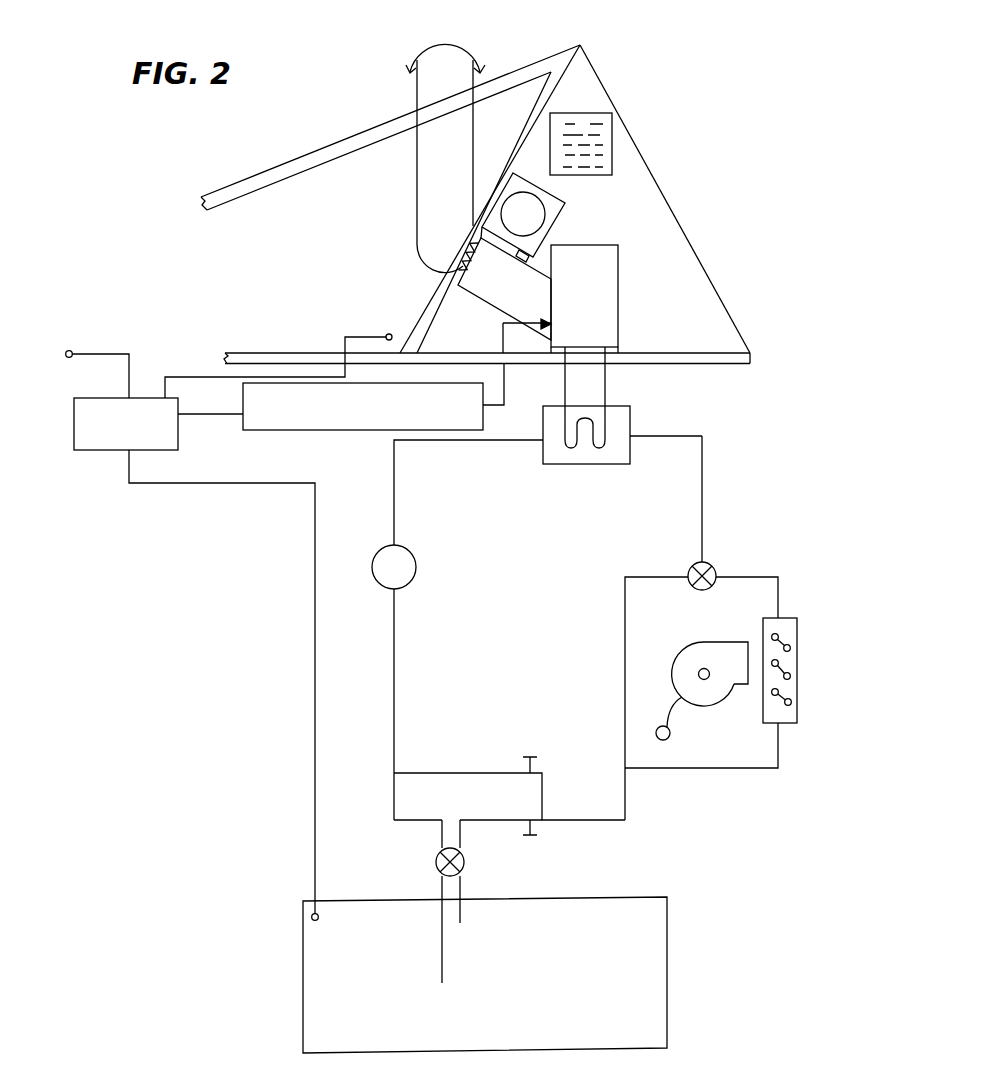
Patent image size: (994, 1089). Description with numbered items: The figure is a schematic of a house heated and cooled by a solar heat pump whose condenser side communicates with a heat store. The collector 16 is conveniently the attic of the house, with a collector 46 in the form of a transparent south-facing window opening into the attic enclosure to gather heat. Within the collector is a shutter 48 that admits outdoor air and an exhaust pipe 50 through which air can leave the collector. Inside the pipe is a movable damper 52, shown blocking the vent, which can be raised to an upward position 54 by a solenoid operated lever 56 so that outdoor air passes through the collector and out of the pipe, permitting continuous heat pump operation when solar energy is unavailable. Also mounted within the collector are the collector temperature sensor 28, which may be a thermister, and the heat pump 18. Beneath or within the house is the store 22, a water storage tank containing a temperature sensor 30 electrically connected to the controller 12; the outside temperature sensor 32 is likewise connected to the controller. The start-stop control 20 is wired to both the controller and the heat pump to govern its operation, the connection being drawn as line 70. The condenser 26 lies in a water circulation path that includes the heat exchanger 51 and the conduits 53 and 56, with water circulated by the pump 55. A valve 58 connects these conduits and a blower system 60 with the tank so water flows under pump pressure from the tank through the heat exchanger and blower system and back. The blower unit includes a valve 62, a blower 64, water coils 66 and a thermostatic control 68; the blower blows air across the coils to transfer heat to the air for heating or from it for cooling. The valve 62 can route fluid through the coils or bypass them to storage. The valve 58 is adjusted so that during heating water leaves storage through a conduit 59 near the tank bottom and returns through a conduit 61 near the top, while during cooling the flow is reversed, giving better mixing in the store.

The controller 12 is at (178, 438).
The collector 16 is at (657, 171).
The heat pump 18 is at (607, 268).
The start-stop control 20 is at (483, 417).
The store 22 is at (653, 977).
The condenser 26 is at (607, 429).
The collector temperature sensor 28 is at (388, 334).
The temperature sensor 30 is at (320, 919).
The outside temperature sensor 32 is at (71, 351).
The collector window 46 is at (664, 228).
The shutter 48 is at (602, 135).
The exhaust pipe 50 is at (470, 78).
The heat exchanger 51 is at (588, 474).
The damper 52 is at (475, 258).
The conduit 53 is at (396, 665).
The damper upward position 54 is at (528, 249).
The pump 55 is at (416, 565).
The solenoid operated lever 56 is at (550, 203).
The valve 58 is at (464, 862).
The conduit 59 is at (443, 975).
The blower system 60 is at (718, 778).
The conduit 61 is at (461, 921).
The valve 62 is at (714, 567).
The blower 64 is at (707, 647).
The water coils 66 is at (798, 632).
The thermostatic control 68 is at (671, 736).
The connection line 70 is at (505, 387).